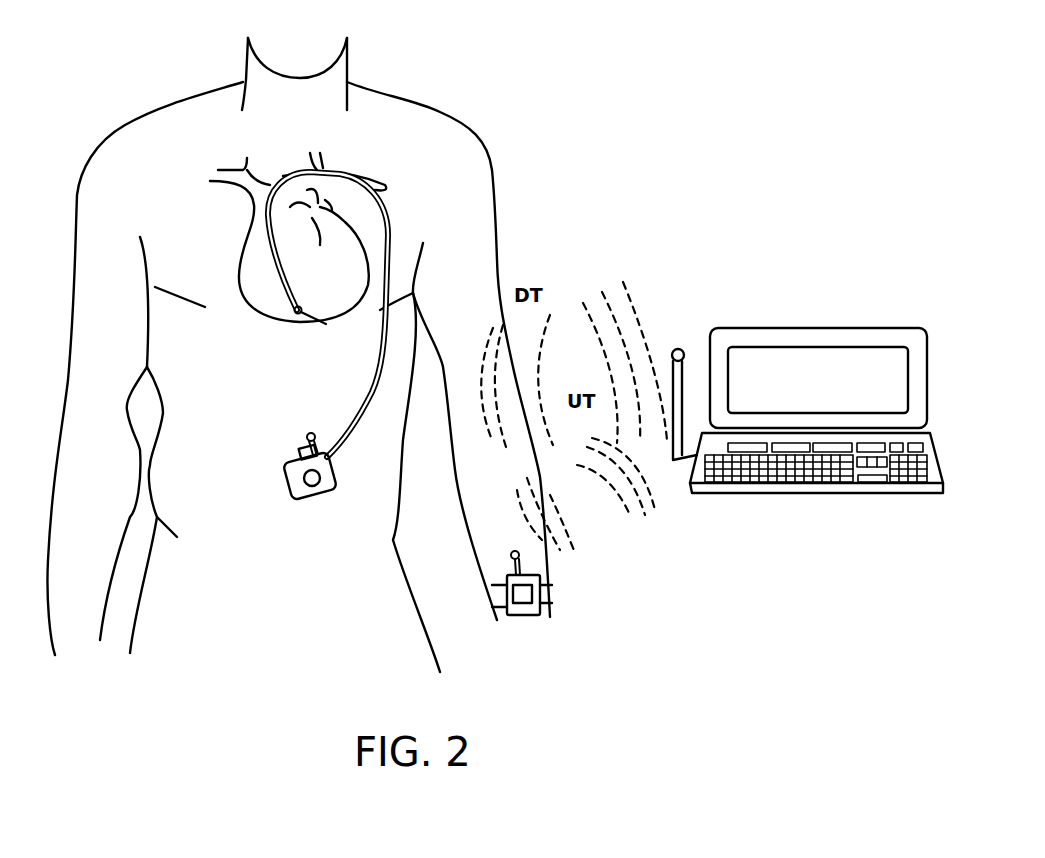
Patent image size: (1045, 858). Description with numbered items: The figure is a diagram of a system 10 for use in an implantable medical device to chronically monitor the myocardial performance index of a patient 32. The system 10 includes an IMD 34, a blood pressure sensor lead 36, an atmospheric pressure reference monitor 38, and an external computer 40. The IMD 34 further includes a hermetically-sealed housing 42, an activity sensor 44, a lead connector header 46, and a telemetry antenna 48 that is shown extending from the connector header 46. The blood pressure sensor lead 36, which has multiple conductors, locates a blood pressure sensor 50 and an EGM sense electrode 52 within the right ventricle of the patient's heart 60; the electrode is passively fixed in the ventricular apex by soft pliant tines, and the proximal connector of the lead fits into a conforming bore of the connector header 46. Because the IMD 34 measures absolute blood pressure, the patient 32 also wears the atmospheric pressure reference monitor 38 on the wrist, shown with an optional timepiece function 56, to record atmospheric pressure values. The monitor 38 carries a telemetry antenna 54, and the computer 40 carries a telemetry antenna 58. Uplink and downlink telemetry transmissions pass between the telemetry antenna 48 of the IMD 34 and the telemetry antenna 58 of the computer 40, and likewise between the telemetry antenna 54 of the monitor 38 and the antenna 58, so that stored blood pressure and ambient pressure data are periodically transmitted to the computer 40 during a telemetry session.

The system 10 is at (700, 148).
The patient 32 is at (432, 110).
The IMD 34 is at (284, 478).
The blood pressure sensor lead 36 is at (372, 378).
The atmospheric pressure reference monitor 38 is at (522, 603).
The external computer 40 is at (878, 340).
The hermetically-sealed housing 42 is at (335, 478).
The activity sensor 44 is at (320, 490).
The lead connector header 46 is at (326, 452).
The telemetry antenna 48 is at (308, 435).
The blood pressure sensor 50 is at (295, 315).
The EGM sense electrode 52 is at (315, 313).
The telemetry antenna 54 is at (525, 560).
The timepiece function 56 is at (530, 595).
The telemetry antenna 58 is at (678, 349).
The heart 60 is at (250, 263).